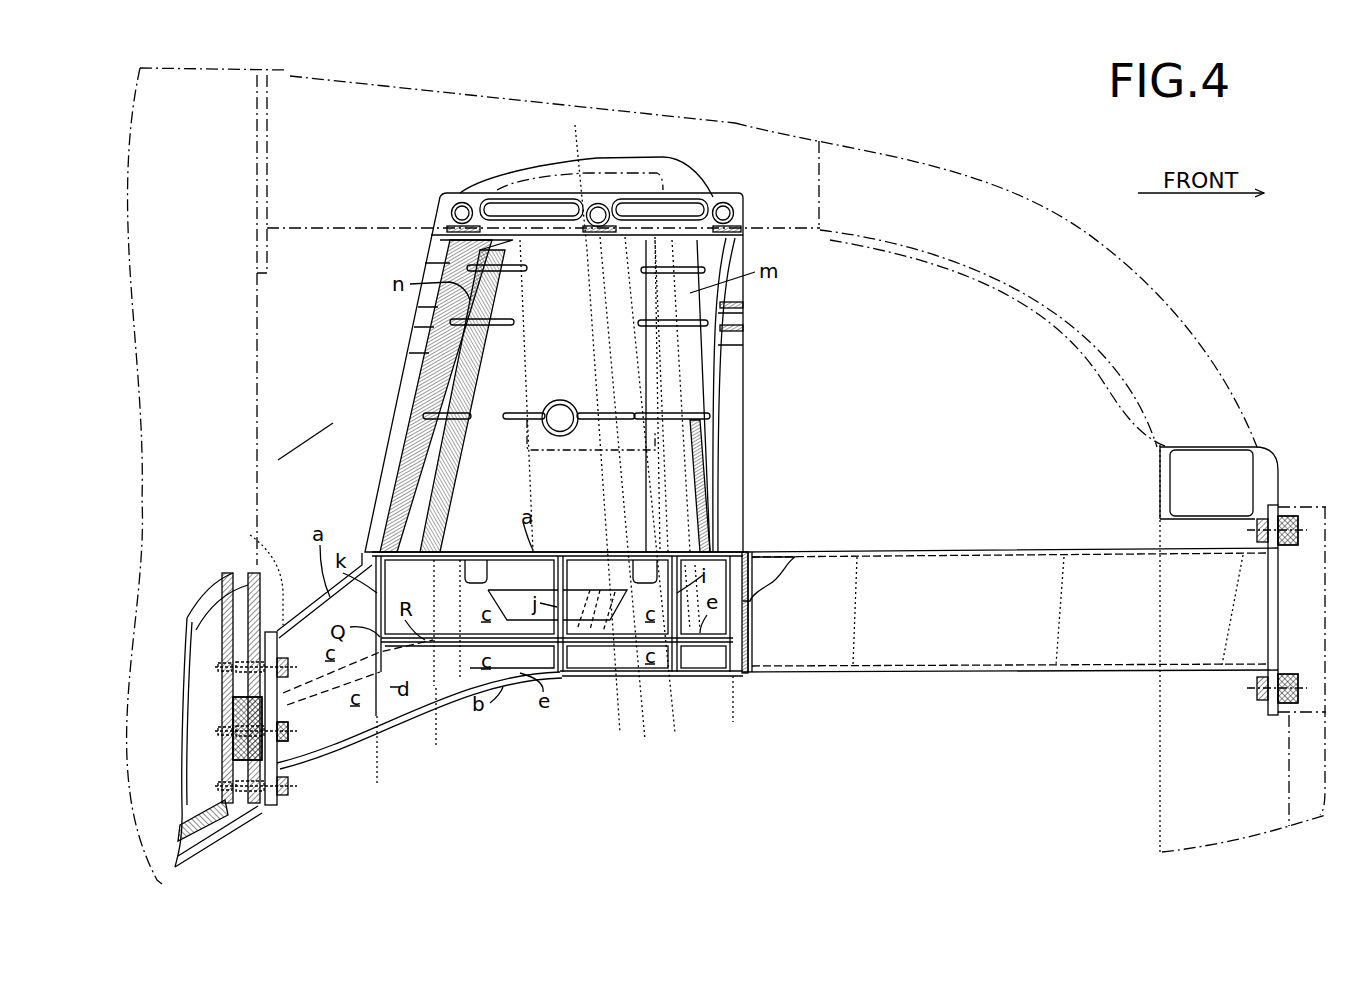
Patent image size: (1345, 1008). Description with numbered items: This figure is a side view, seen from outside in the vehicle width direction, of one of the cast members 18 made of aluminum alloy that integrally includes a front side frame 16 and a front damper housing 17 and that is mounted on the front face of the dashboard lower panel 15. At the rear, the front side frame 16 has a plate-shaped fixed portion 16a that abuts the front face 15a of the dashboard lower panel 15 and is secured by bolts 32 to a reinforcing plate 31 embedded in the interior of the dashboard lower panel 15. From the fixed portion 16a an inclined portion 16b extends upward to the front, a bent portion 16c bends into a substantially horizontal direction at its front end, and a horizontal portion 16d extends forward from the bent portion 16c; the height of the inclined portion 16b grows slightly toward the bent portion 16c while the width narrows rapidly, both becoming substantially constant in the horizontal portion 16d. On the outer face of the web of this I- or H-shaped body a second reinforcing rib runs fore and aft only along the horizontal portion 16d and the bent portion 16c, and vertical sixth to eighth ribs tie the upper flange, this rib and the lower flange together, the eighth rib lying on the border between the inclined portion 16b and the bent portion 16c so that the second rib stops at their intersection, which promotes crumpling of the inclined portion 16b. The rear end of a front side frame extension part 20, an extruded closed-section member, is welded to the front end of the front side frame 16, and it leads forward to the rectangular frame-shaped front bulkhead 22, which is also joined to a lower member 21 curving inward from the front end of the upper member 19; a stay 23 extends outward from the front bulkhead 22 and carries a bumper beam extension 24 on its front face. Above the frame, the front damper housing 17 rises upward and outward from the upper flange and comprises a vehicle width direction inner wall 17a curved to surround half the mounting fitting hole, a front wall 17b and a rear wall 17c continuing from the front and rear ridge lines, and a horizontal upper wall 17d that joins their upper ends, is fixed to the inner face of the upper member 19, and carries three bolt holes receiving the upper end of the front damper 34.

The dashboard lower panel 15 is at (263, 328).
The front face of the dashboard lower panel 15a is at (246, 573).
The front side frame 16 is at (310, 597).
The fixed portion 16a is at (270, 806).
The inclined portion 16b is at (355, 785).
The bent portion 16c is at (436, 744).
The horizontal portion 16d is at (733, 715).
The front damper housing 17 is at (377, 473).
The vehicle width direction inner wall 17a is at (590, 353).
The front wall 17b is at (745, 388).
The rear wall 17c is at (400, 373).
The upper wall 17d is at (670, 152).
The cast member 18 is at (305, 439).
The upper member 19 is at (735, 122).
The front side frame extension part 20 is at (985, 565).
The lower member 21 is at (968, 173).
The front bulkhead 22 is at (1157, 758).
The stay 23 is at (1273, 630).
The bumper beam extension 24 is at (1299, 504).
The reinforcing plate 31 is at (250, 742).
The bolts 32 is at (285, 698).
The front damper 34 is at (588, 500).